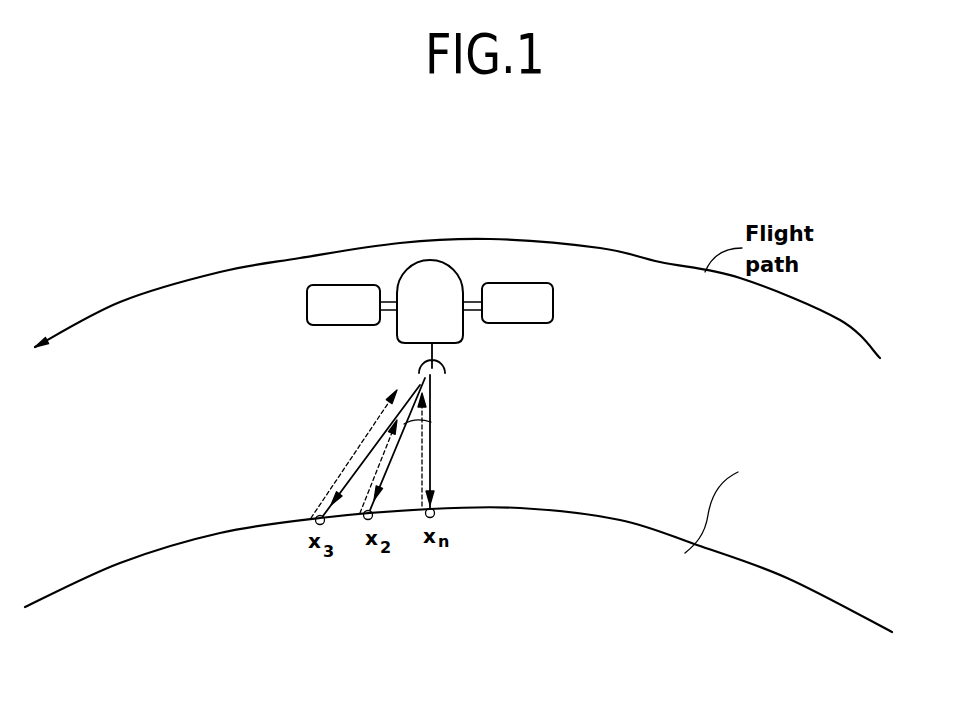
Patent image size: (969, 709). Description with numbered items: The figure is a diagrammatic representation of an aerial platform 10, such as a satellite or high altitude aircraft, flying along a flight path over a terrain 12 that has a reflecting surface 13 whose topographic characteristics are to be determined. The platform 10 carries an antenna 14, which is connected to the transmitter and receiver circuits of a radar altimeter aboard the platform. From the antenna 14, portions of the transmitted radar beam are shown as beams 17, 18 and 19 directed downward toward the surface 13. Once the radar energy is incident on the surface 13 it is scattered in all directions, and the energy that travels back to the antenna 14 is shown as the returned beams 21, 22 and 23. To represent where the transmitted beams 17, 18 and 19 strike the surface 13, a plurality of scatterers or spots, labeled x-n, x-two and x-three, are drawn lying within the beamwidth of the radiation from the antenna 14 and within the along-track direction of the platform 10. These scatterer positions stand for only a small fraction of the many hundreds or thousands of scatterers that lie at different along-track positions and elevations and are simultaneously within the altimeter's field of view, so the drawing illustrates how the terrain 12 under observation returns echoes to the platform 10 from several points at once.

The aerial platform 10 is at (453, 283).
The terrain 12 is at (784, 505).
The reflecting surface 13 is at (548, 508).
The antenna 14 is at (434, 354).
The transmitted beam portion 17 is at (431, 433).
The transmitted beam portion 18 is at (430, 423).
The transmitted beam portion 19 is at (332, 492).
The returned beam 21 is at (423, 475).
The returned beam 22 is at (364, 493).
The returned beam 23 is at (363, 445).